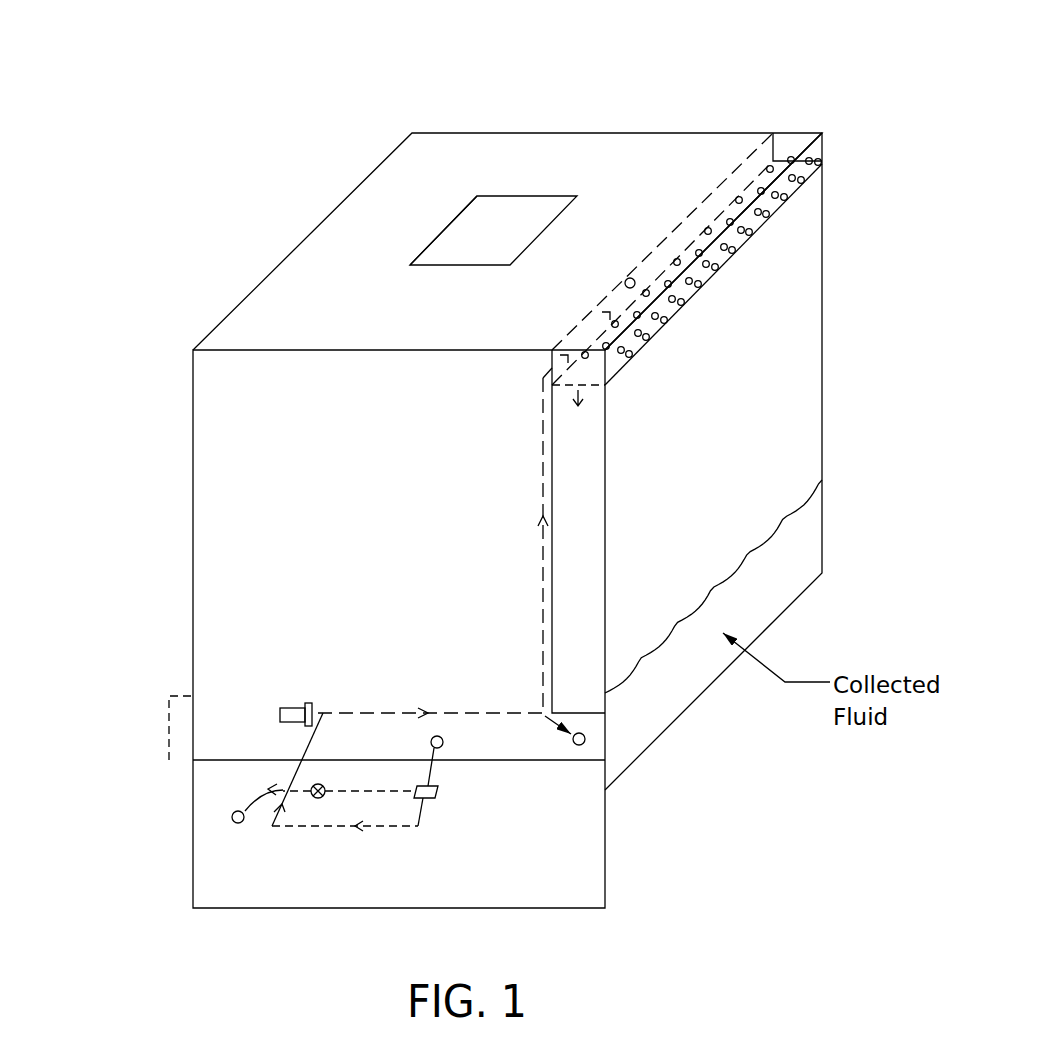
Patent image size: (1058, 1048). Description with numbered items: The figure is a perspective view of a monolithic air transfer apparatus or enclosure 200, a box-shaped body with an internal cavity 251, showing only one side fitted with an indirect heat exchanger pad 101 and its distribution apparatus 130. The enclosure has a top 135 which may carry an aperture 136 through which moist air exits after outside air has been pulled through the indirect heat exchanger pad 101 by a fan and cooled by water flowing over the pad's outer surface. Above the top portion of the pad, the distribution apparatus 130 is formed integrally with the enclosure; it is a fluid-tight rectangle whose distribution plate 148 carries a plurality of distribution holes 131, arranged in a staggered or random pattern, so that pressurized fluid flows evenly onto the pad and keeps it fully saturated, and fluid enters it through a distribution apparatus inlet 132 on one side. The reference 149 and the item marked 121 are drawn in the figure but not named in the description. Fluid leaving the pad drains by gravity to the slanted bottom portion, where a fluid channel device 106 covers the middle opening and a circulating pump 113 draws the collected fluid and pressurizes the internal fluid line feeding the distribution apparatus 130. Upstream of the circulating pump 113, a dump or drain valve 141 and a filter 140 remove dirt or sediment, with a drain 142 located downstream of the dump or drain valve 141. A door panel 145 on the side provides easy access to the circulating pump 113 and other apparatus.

The monolithic air transfer apparatus or enclosure 200 is at (208, 260).
The internal cavity 251 is at (283, 556).
The distribution apparatus 130 is at (794, 143).
The distribution holes 131 is at (693, 277).
The distribution apparatus inlet 132 is at (622, 287).
The top 135 is at (547, 182).
The aperture 136 is at (480, 190).
The distribution plate 148 is at (798, 187).
The perforations 149 is at (745, 228).
The indirect heat exchanger pad 101 is at (578, 540).
The fluid channel device 106 is at (585, 745).
The circulating pump 113 is at (270, 720).
The fluid inlet 121 is at (447, 747).
The filter 140 is at (443, 793).
The dump or drain valve 141 is at (318, 800).
The drain 142 is at (232, 818).
The door panel 145 is at (162, 729).